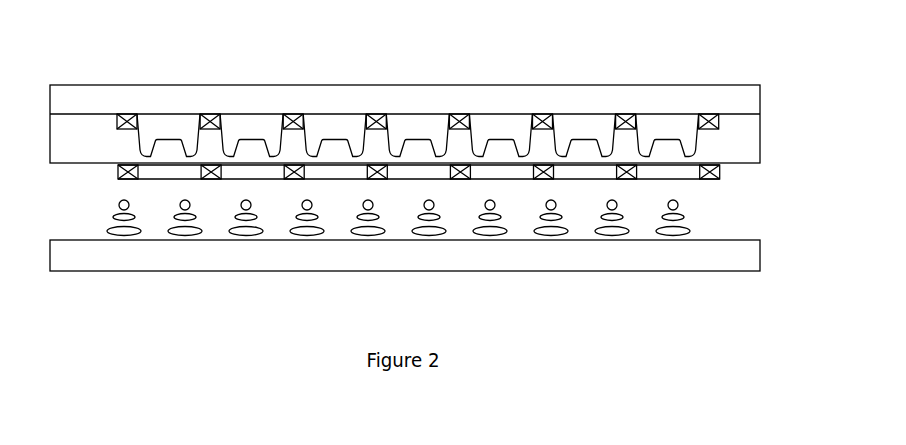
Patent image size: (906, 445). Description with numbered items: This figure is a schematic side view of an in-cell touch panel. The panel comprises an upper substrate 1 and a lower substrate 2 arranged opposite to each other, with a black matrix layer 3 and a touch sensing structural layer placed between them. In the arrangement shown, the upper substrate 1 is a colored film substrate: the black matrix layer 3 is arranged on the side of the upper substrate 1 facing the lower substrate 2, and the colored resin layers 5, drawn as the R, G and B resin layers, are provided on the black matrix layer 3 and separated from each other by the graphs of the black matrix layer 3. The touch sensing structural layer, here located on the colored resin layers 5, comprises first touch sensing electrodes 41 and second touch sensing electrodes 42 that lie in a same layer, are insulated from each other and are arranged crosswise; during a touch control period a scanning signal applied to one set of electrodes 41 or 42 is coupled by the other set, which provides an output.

The upper substrate 1 is at (67, 105).
The lower substrate 2 is at (82, 253).
The black matrix layer 3 is at (208, 113).
The colored resin layer 5 is at (275, 126).
The first touch sensing electrodes 41 is at (582, 173).
The second touch sensing electrodes 42 is at (380, 178).